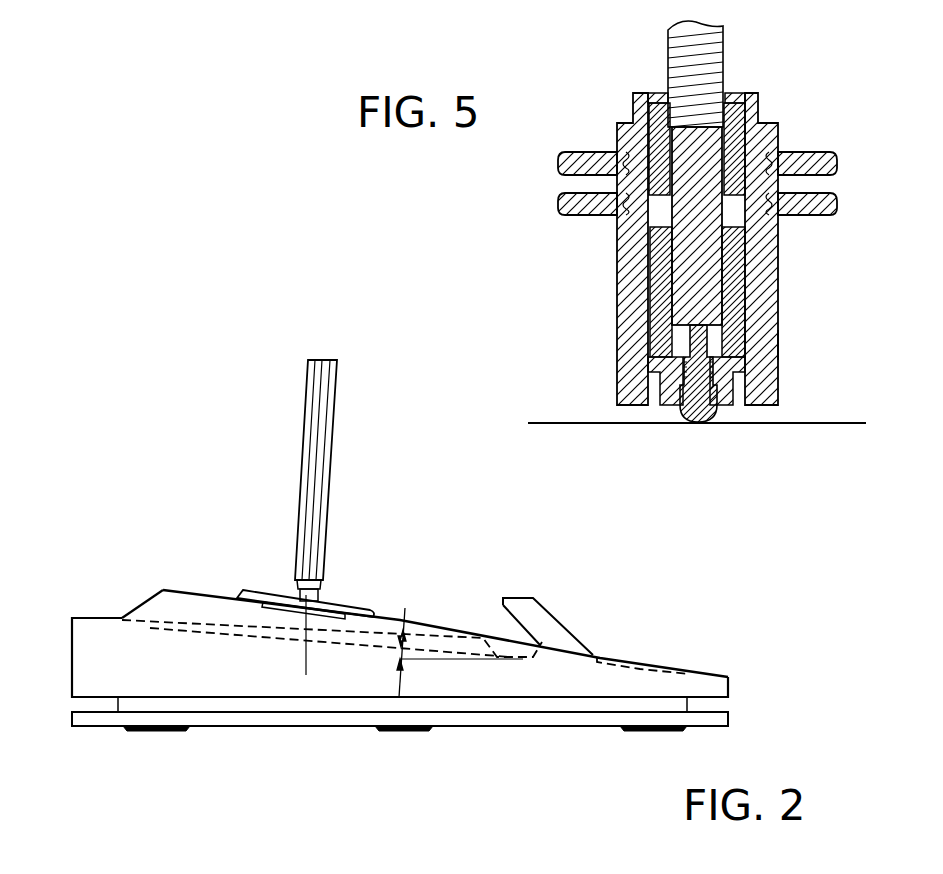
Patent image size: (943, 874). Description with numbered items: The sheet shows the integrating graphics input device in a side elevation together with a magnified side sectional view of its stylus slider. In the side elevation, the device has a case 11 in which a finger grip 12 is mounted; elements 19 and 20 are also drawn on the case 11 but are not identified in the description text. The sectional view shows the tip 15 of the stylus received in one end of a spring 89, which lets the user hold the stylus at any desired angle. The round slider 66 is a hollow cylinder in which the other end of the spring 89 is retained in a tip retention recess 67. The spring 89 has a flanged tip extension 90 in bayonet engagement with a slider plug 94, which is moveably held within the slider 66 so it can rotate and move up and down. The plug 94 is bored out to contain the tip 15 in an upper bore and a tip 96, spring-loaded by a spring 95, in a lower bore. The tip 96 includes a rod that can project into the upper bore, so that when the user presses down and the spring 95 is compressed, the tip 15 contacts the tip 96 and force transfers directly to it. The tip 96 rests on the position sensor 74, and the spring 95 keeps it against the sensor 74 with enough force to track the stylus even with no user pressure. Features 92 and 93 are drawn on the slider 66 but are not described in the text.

In FIG. 2, the case 11 is at (80, 617).
In FIG. 2, the finger grip 12 is at (518, 597).
In FIG. 2, the slide plate 19 is at (270, 592).
In FIG. 2, the wedge 20 is at (180, 590).
In FIG. 5, the tip 15 is at (672, 172).
In FIG. 5, the round slider 66 is at (778, 255).
In FIG. 5, the tip retention recess 67 is at (730, 96).
In FIG. 5, the position sensor 74 is at (797, 425).
In FIG. 5, the spring 89 is at (668, 54).
In FIG. 5, the flanged tip extension 90 is at (663, 213).
In FIG. 5, the flange 92 is at (565, 153).
In FIG. 5, the housing wall 93 is at (768, 347).
In FIG. 5, the slider plug 94 is at (655, 306).
In FIG. 5, the spring 95 is at (680, 366).
In FIG. 5, the tip 96 is at (680, 418).